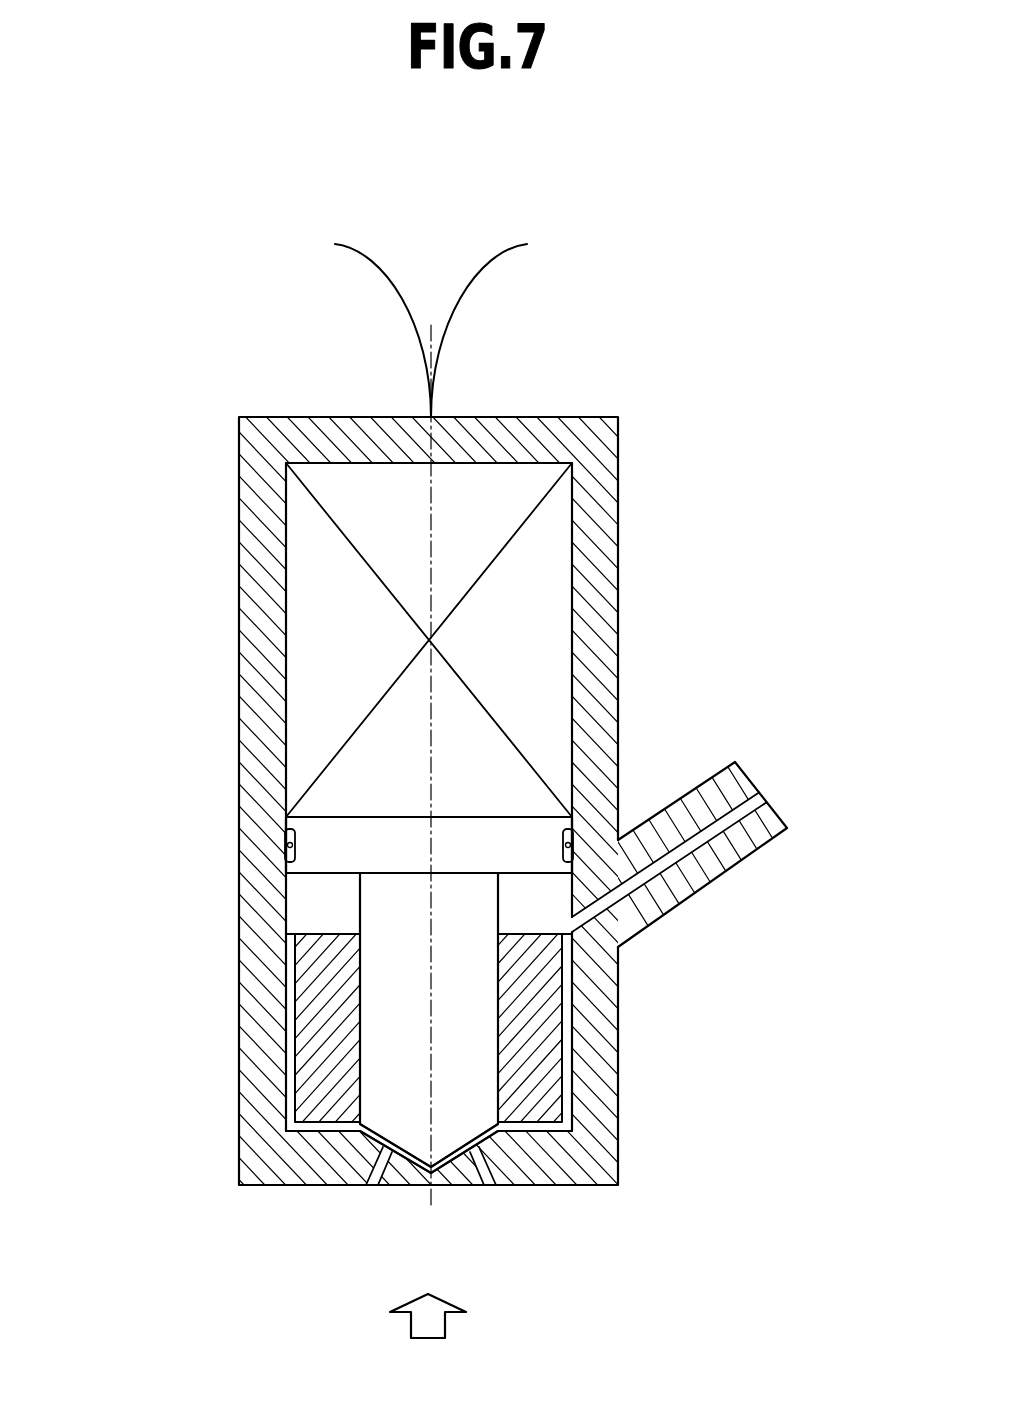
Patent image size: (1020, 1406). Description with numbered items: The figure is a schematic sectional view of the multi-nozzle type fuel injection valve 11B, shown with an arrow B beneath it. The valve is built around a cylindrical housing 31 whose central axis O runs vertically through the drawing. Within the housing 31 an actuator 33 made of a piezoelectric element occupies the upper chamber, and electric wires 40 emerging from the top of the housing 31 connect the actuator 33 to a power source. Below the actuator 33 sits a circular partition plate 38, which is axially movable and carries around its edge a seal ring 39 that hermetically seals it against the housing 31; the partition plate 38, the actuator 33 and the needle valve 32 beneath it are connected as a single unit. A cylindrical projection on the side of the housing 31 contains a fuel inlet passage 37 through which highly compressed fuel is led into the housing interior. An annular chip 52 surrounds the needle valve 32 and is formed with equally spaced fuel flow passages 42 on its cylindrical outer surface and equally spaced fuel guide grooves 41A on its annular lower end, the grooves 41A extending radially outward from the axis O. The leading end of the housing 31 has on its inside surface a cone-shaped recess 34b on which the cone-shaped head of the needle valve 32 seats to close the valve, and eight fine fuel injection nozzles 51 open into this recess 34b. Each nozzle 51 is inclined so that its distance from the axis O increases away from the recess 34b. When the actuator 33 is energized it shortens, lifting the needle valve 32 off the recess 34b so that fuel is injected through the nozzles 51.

The multi-nozzle type fuel injection valve 11B is at (733, 334).
The housing 31 is at (262, 1005).
The needle valve 32 is at (440, 993).
The actuator 33 is at (500, 650).
The cone-shaped recess 34b is at (372, 1128).
The fuel inlet passage 37 is at (762, 797).
The partition plate 38 is at (358, 830).
The seal ring 39 is at (286, 840).
The electric wires 40 is at (405, 312).
The fuel guide grooves 41A is at (573, 1149).
The fuel flow passages 42 is at (566, 1020).
The fuel injection nozzles 51 is at (363, 1160).
The annular chip 52 is at (535, 1062).
The axis O is at (431, 568).
The direction arrow B is at (428, 1332).